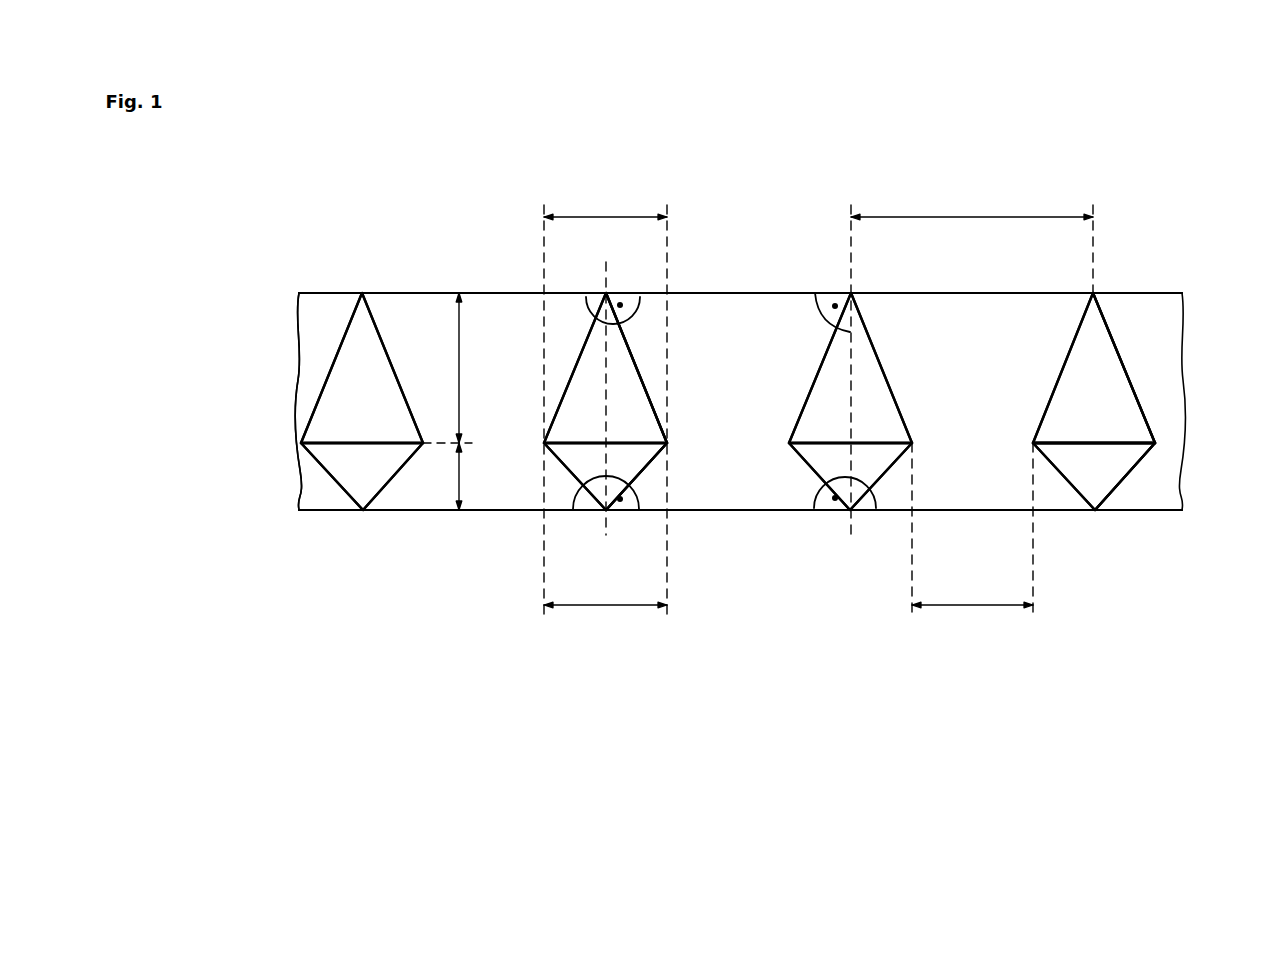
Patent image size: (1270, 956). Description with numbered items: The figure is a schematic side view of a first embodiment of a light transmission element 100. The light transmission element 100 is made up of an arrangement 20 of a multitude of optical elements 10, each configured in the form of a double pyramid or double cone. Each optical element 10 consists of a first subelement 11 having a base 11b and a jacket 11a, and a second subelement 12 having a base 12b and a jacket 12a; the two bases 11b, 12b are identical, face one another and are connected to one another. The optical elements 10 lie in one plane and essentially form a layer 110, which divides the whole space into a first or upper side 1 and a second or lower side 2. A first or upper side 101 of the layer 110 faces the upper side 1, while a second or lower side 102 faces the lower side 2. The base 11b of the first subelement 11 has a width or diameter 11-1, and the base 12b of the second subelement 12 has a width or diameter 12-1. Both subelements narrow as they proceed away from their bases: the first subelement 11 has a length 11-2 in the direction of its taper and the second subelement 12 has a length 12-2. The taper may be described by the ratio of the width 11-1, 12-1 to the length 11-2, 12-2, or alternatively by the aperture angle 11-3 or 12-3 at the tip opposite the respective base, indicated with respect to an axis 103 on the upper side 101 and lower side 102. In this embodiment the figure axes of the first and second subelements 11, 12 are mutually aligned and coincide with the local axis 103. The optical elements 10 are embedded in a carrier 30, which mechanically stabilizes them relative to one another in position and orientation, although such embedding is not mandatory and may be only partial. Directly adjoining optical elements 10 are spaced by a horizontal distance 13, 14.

The first side 1 is at (380, 207).
The second side 2 is at (377, 631).
The optical element 10 is at (329, 298).
The first subelement 11 is at (362, 325).
The jacket 11a is at (1139, 378).
The base 11b is at (1116, 455).
The width 11-1 is at (610, 217).
The length 11-2 is at (458, 343).
The aperture angle 11-3 is at (614, 411).
The second subelement 12 is at (362, 479).
The jacket 12a is at (1129, 488).
The base 12b is at (1095, 430).
The width 12-1 is at (613, 606).
The length 12-2 is at (460, 477).
The aperture angle 12-3 is at (614, 458).
The horizontal distance 13 is at (973, 217).
The horizontal distance 14 is at (969, 606).
The arrangement 20 is at (1157, 162).
The carrier 30 is at (988, 292).
The light transmission element 100 is at (240, 279).
The first side of layer 101 is at (423, 292).
The second side of layer 102 is at (422, 512).
The axis 103 is at (604, 350).
The layer 110 is at (270, 510).